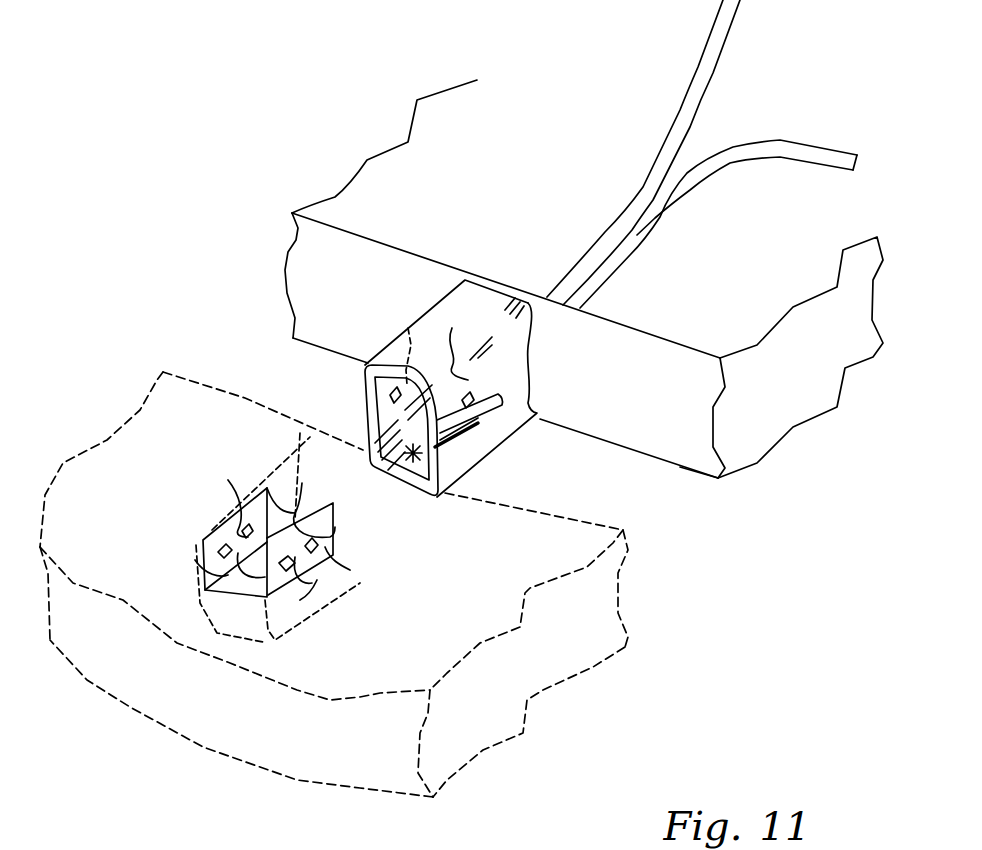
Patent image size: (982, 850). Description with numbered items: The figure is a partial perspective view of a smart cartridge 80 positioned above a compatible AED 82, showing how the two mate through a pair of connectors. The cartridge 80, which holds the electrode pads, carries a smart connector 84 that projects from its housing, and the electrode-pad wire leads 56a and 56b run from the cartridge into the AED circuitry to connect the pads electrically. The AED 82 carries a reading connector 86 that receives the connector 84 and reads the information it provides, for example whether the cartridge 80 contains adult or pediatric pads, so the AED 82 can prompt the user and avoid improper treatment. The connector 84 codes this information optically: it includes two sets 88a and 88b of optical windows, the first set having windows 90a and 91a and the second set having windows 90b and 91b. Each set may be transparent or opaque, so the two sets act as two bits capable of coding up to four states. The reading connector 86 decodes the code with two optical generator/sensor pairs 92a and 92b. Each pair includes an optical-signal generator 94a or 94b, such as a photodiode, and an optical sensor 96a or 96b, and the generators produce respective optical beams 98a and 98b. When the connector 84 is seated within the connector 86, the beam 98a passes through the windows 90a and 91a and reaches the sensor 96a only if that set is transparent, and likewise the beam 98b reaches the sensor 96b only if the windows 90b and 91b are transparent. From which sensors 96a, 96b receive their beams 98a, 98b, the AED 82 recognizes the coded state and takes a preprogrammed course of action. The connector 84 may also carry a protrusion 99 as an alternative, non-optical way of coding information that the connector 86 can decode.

The smart cartridge 80 is at (363, 152).
The electrode-pad wire lead 56a is at (780, 140).
The electrode-pad wire lead 56b is at (678, 120).
The compatible AED 82 is at (160, 378).
The smart connector 84 is at (538, 392).
The reading connector 86 is at (297, 457).
The first set of optical windows 88a is at (462, 356).
The second set of optical windows 88b is at (377, 417).
The optical window 90a is at (498, 440).
The optical window 90b is at (468, 462).
The optical window 91a is at (409, 330).
The optical window 91b is at (365, 393).
The optical generator/sensor pair 92a is at (283, 483).
The optical generator/sensor pair 92b is at (247, 578).
The optical-signal generator 94a is at (322, 540).
The optical-signal generator 94b is at (320, 570).
The optical sensor 96a is at (248, 527).
The optical sensor 96b is at (216, 545).
The optical beam 98a is at (317, 580).
The optical beam 98b is at (222, 573).
The protrusion 99 is at (409, 465).